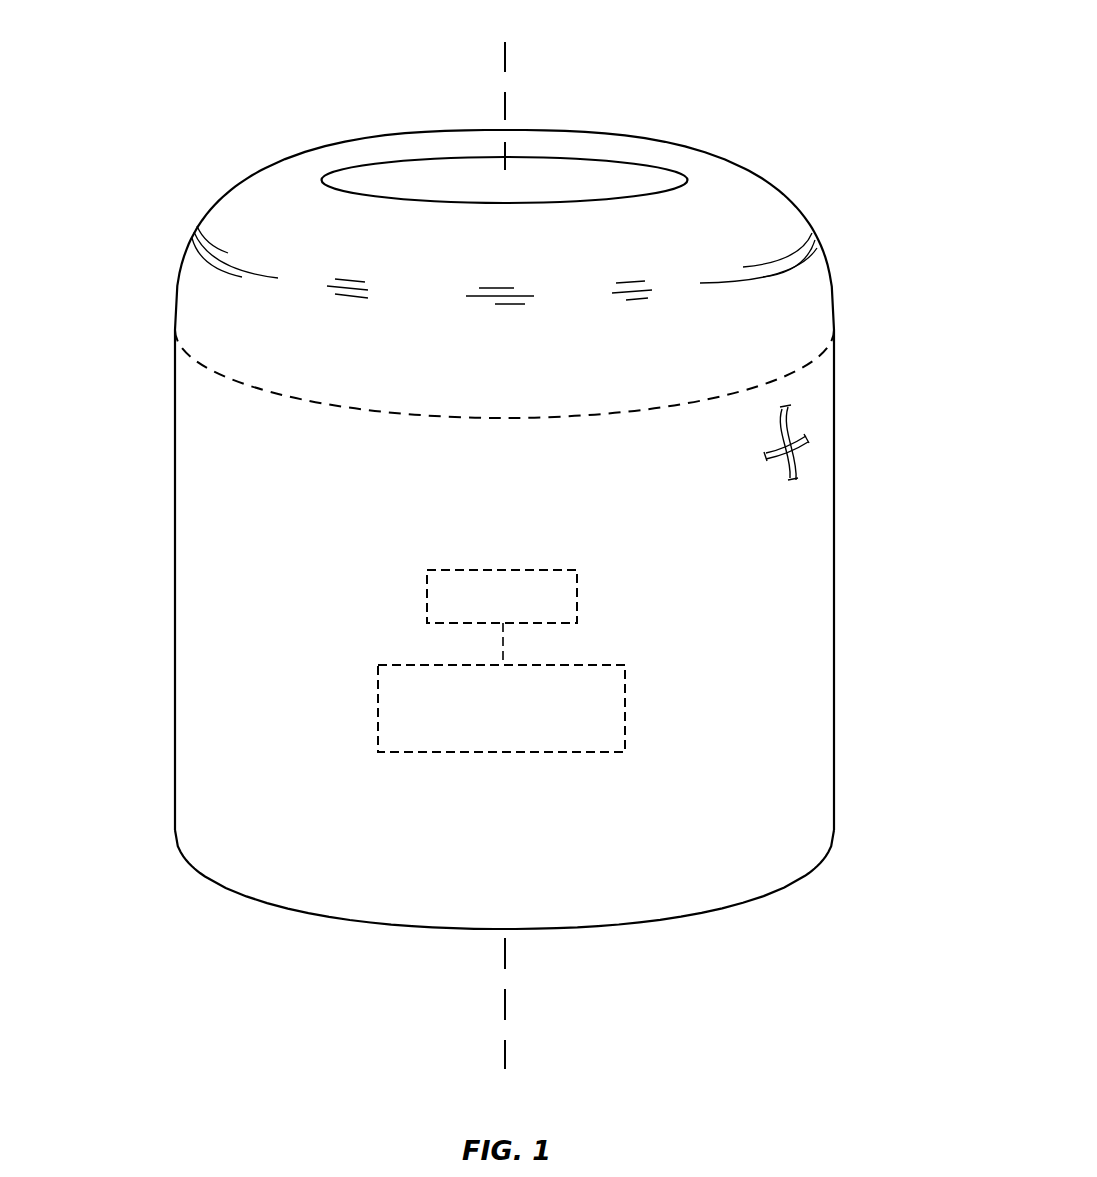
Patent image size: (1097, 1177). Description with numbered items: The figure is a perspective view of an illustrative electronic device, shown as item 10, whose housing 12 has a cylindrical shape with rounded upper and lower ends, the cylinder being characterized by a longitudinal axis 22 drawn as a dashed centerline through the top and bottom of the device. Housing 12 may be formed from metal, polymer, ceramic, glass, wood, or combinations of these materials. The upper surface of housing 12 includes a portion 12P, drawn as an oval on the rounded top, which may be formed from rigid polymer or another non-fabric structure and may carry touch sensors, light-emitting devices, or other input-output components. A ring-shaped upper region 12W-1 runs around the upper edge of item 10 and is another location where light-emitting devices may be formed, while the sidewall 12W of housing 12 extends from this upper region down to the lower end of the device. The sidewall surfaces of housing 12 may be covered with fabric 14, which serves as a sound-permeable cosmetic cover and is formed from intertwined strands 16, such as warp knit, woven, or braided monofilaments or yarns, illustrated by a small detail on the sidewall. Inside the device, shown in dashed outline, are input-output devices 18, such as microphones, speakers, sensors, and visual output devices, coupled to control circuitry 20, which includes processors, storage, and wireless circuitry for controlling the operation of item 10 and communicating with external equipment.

The item 10 is at (751, 74).
The housing 12 is at (834, 637).
The portion 12P is at (592, 178).
The housing sidewall 12W is at (177, 222).
The ring-shaped upper region 12W-1 is at (827, 220).
The fabric 14 is at (762, 434).
The strands 16 is at (768, 460).
The input-output devices 18 is at (577, 585).
The control circuitry 20 is at (625, 697).
The longitudinal axis 22 is at (505, 52).